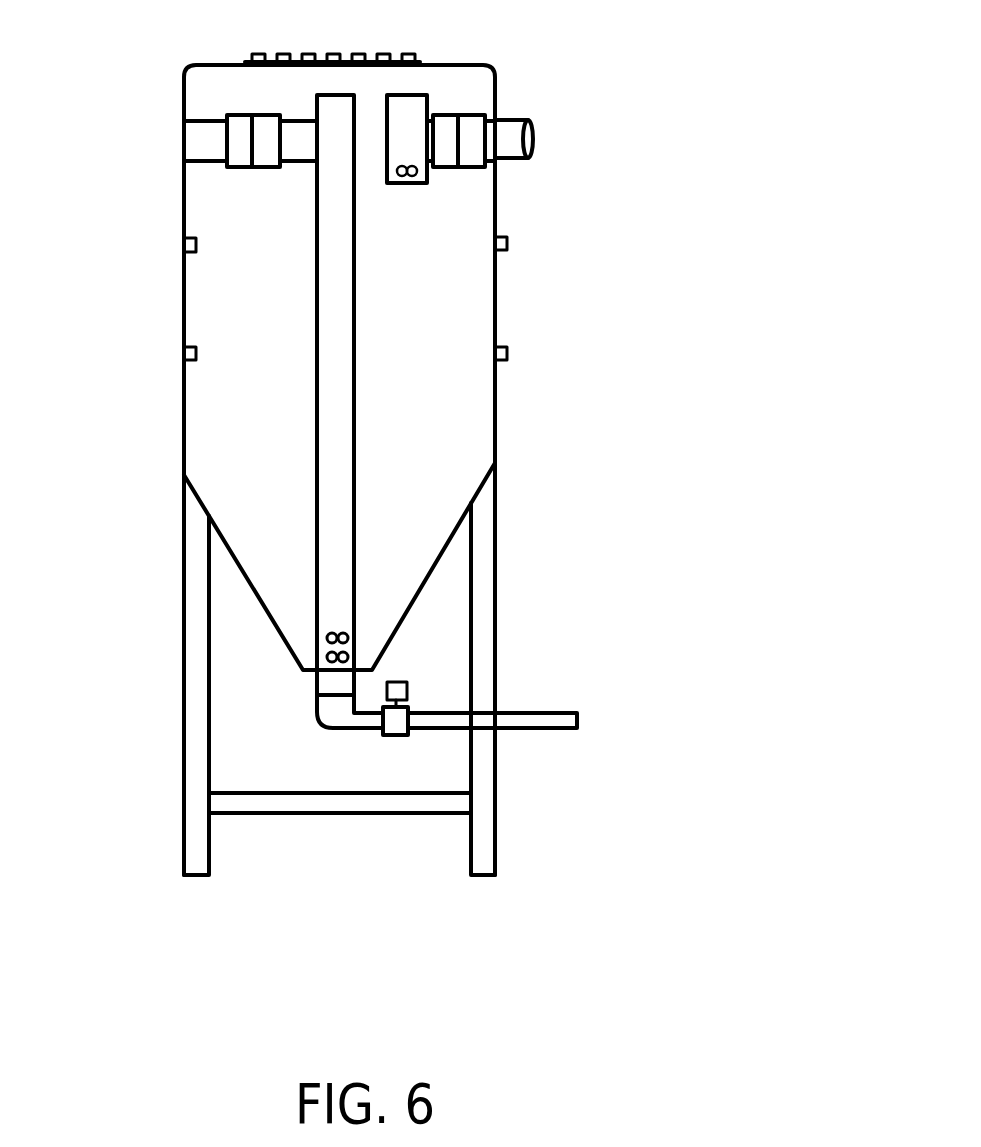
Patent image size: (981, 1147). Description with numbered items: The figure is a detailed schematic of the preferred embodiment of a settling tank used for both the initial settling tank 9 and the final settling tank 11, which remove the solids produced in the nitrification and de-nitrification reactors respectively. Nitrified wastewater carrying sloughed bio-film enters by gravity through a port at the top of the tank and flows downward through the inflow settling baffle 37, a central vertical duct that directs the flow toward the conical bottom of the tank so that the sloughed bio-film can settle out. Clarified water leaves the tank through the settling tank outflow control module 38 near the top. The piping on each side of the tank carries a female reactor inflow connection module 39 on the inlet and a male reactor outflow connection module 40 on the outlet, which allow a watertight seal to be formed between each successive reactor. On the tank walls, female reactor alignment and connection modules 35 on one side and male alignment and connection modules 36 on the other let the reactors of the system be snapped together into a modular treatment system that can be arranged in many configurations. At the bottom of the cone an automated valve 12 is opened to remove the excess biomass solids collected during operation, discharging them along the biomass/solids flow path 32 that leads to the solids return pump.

The settling tank 9 is at (412, 464).
The settling tank 11 is at (447, 448).
The automated valve 12 is at (412, 712).
The biomass/solids flow path to solids return pump 32 is at (580, 720).
The reactor alignment and connection module (female) 35 is at (184, 245).
The reactor alignment and connection module (male) 36 is at (507, 243).
The inflow settling baffle 37 is at (335, 450).
The settling tank outflow control module 38 is at (460, 112).
The reactor inflow connection module (female) 39 is at (184, 145).
The reactor outflow connection module (male) 40 is at (537, 138).